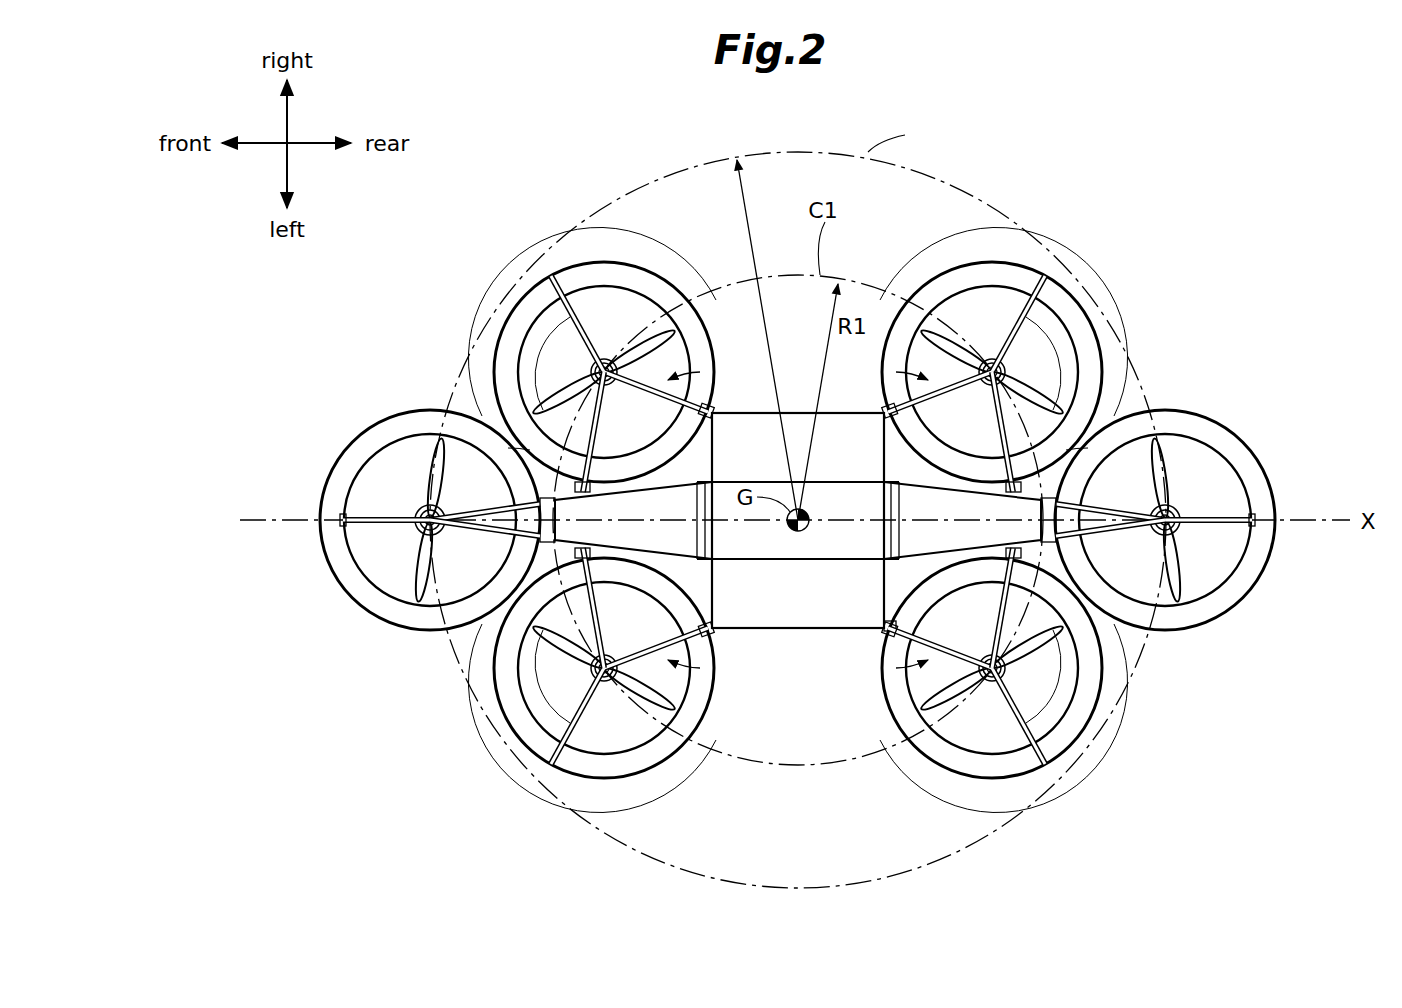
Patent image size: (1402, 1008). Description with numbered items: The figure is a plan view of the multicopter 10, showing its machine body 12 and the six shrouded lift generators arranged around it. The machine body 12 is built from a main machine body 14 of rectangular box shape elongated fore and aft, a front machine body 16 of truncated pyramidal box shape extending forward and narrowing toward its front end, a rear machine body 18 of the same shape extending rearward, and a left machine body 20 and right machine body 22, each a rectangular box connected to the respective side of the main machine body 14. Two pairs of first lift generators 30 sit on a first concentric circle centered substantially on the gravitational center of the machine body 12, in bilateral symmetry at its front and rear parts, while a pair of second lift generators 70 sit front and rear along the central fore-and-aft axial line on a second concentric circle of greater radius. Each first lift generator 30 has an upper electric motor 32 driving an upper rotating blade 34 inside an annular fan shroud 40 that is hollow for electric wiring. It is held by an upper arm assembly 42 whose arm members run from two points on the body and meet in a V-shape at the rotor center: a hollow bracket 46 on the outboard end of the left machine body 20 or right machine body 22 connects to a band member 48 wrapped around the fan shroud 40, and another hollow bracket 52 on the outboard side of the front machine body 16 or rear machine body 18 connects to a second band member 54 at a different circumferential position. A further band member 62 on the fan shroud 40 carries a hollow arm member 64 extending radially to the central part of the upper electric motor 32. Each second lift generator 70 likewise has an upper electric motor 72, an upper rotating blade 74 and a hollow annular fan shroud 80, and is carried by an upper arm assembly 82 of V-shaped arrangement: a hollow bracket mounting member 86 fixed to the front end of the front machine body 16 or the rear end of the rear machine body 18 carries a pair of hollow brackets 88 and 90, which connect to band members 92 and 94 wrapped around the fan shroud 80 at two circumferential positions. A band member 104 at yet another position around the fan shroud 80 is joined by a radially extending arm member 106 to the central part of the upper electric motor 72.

The multicopter 10 is at (1140, 302).
The machine body 12 is at (845, 630).
The main machine body 14 is at (853, 632).
The front machine body 16 is at (700, 562).
The rear machine body 18 is at (942, 640).
The left machine body 20 is at (780, 630).
The right machine body 22 is at (856, 412).
The first lift generator 30 is at (624, 262).
The upper electric motor 32 is at (600, 345).
The upper rotating blade 34 is at (560, 372).
The fan shroud 40 is at (640, 290).
The upper arm assembly 42 is at (702, 368).
The bracket 46 is at (712, 392).
The band member 48 is at (668, 484).
The bracket 52 is at (588, 470).
The band member 54 is at (600, 470).
The band member 62 is at (540, 258).
The hollow arm member 64 is at (570, 317).
The second lift generator 70 is at (355, 432).
The upper electric motor 72 is at (418, 590).
The upper rotating blade 74 is at (420, 512).
The fan shroud 80 is at (385, 612).
The upper arm assembly 82 is at (422, 600).
The bracket mounting member 86 is at (585, 503).
The bracket 88 is at (590, 670).
The bracket 90 is at (555, 445).
The band member 92 is at (460, 536).
The band member 94 is at (515, 505).
The band member 104 is at (340, 522).
The arm member 106 is at (345, 530).